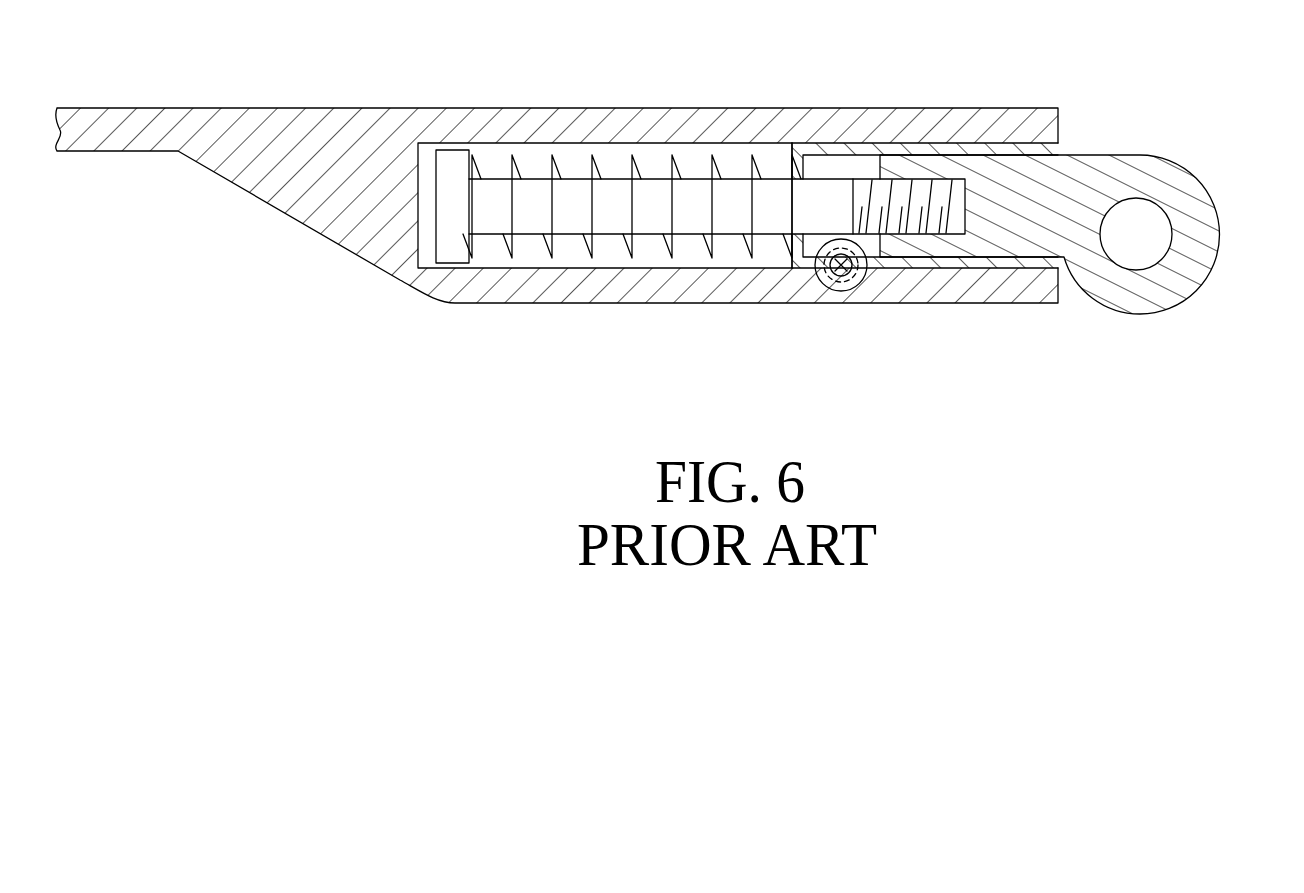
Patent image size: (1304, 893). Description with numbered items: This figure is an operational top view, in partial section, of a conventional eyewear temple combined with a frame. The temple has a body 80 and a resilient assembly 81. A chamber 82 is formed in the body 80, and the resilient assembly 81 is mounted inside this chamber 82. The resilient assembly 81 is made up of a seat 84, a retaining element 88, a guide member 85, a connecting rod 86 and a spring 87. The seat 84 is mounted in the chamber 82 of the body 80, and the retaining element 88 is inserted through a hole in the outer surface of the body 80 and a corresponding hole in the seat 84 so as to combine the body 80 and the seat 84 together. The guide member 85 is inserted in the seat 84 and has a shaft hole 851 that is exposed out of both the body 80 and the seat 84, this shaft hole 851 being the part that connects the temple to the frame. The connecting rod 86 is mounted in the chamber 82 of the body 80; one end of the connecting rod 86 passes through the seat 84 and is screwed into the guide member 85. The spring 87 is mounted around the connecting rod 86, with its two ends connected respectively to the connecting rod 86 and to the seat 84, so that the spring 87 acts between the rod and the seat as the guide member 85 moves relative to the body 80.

The body 80 is at (836, 127).
The resilient assembly 81 is at (674, 219).
The chamber 82 is at (720, 145).
The seat 84 is at (920, 148).
The guide member 85 is at (1086, 193).
The shaft hole 851 is at (1148, 228).
The connecting rod 86 is at (609, 218).
The spring 87 is at (633, 205).
The retaining element 88 is at (843, 272).